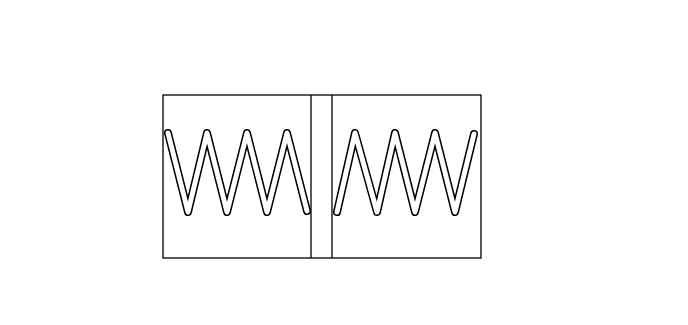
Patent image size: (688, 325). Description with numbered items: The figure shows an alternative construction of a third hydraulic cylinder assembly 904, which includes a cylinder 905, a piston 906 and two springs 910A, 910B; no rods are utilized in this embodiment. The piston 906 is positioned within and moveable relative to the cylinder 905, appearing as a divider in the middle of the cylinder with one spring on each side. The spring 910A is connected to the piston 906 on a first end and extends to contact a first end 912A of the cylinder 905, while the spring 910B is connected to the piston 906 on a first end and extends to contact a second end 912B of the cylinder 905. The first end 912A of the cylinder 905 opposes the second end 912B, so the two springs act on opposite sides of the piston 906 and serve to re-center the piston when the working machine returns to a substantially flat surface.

The third hydraulic cylinder assembly 904 is at (108, 42).
The cylinder 905 is at (380, 95).
The piston 906 is at (320, 112).
The spring 910A is at (443, 145).
The spring 910B is at (197, 145).
The first end of the cylinder 912A is at (482, 137).
The second end of the cylinder 912B is at (163, 140).